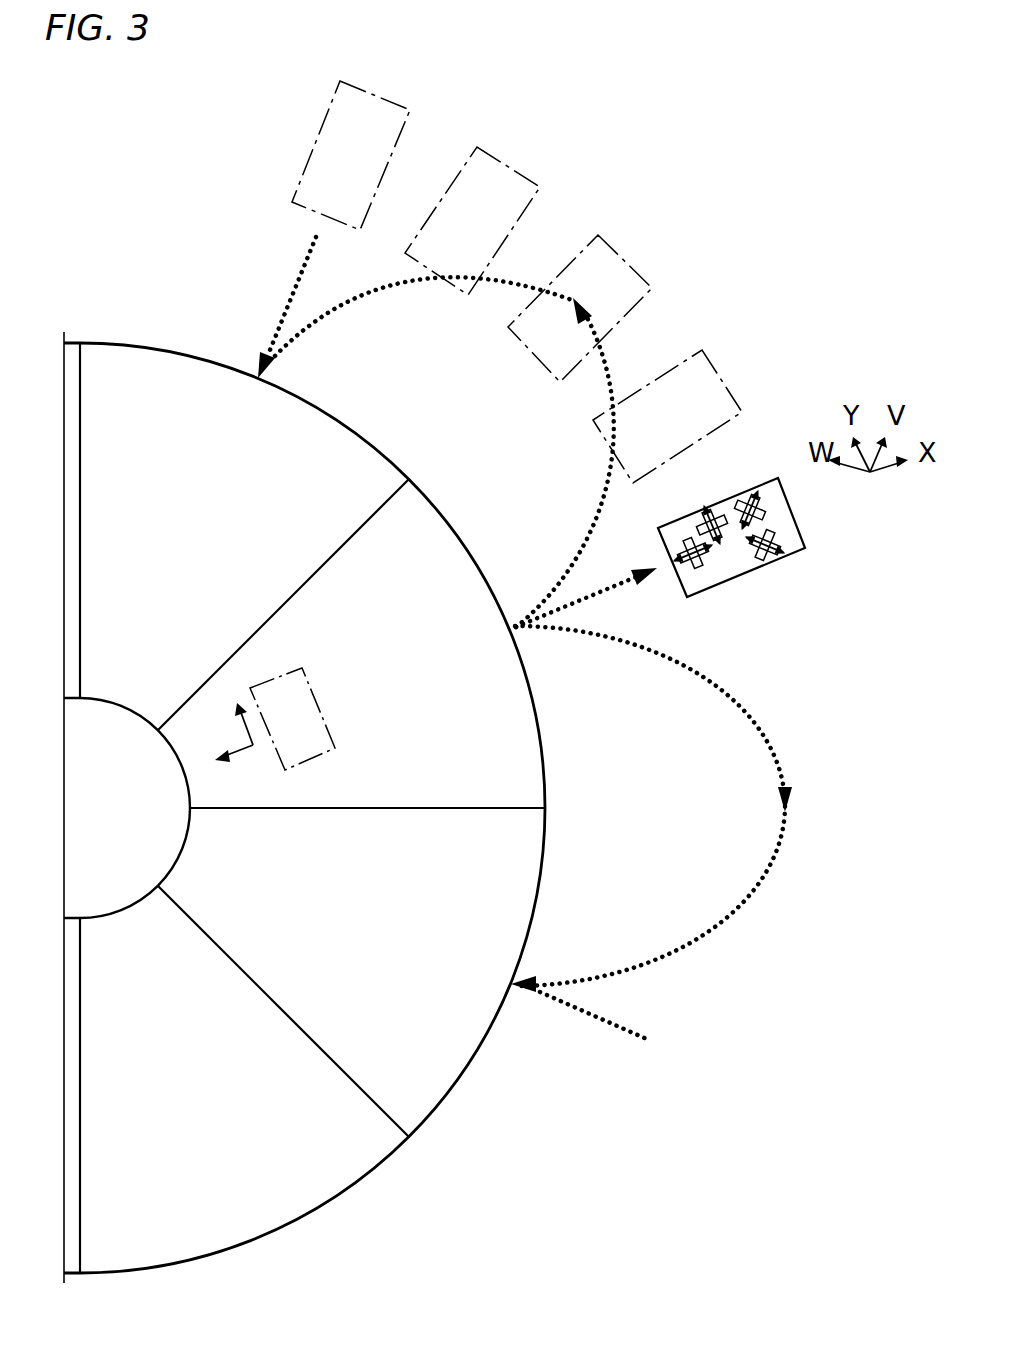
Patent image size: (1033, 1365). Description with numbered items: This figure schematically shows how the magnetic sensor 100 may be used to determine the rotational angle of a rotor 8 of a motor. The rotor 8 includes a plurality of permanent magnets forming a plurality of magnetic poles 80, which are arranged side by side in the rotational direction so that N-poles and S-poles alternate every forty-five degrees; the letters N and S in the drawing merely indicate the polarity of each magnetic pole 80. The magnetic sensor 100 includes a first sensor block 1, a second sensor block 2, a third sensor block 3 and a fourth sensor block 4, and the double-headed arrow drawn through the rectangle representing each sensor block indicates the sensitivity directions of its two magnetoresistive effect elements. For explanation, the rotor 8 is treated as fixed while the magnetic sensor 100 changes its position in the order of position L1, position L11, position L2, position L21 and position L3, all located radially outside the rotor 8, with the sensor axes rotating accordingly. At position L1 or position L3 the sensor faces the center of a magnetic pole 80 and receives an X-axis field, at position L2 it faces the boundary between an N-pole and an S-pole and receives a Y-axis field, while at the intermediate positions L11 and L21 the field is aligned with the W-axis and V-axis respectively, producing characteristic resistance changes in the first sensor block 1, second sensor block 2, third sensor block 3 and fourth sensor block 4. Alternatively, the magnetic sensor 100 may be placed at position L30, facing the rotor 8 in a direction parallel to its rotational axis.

The rotor 8 is at (120, 342).
The magnetic pole 80 is at (310, 428).
The magnetic sensor 100 is at (799, 532).
The first sensor block 1 is at (684, 572).
The second sensor block 2 is at (707, 518).
The third sensor block 3 is at (743, 498).
The fourth sensor block 4 is at (773, 560).
The position L1 is at (377, 100).
The position L11 is at (510, 172).
The position L2 is at (623, 263).
The position L21 is at (713, 375).
The position L3 is at (747, 576).
The position L30 is at (302, 687).